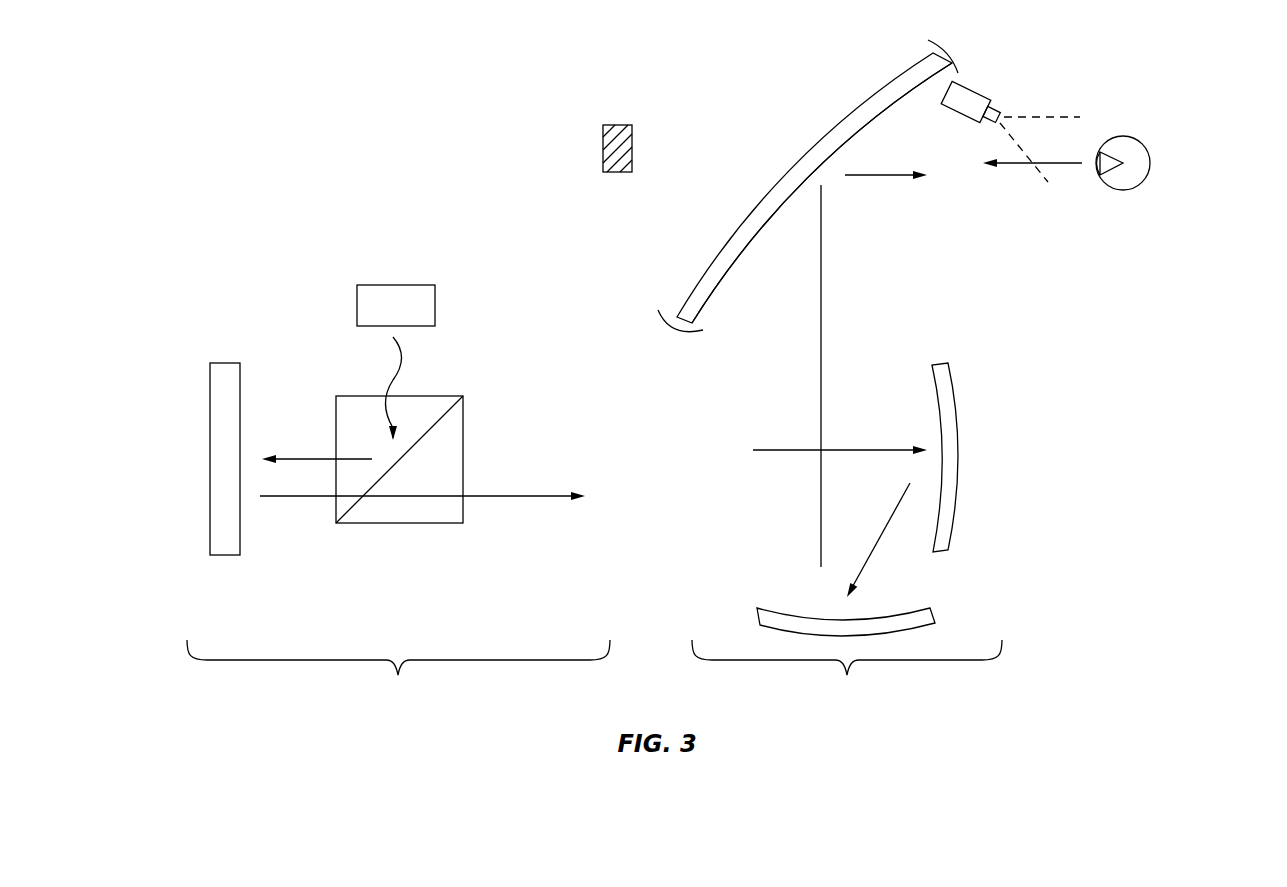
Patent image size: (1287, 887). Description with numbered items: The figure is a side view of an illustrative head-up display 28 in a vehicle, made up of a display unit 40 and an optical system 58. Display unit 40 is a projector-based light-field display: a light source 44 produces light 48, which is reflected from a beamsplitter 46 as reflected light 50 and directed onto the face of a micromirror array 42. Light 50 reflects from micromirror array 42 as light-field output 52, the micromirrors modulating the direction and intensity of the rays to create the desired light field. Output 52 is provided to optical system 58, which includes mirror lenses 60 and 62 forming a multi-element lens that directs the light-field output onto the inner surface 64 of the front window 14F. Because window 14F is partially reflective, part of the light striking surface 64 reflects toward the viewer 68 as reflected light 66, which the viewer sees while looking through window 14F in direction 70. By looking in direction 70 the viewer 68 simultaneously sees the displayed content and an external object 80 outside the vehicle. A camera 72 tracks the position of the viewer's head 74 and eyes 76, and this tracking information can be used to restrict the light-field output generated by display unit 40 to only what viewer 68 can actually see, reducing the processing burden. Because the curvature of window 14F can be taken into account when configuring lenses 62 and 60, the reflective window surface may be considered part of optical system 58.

The head-up display 28 is at (140, 180).
The external object 80 is at (622, 123).
The light source 44 is at (363, 303).
The micromirror array 42 is at (223, 547).
The beamsplitter 46 is at (398, 524).
The light 48 is at (401, 383).
The reflected light 50 is at (295, 456).
The light-field output 52 is at (295, 498).
The display unit 40 is at (398, 670).
The optical system 58 is at (847, 670).
The front window 14F is at (728, 242).
The inner surface 64 is at (733, 263).
The reflected light 66 is at (882, 177).
The direction 70 is at (1017, 165).
The camera 72 is at (973, 93).
The viewer 68 is at (1132, 112).
The head 74 is at (1150, 160).
The eyes 76 is at (1112, 177).
The mirror lens 62 is at (955, 535).
The mirror lens 60 is at (933, 618).